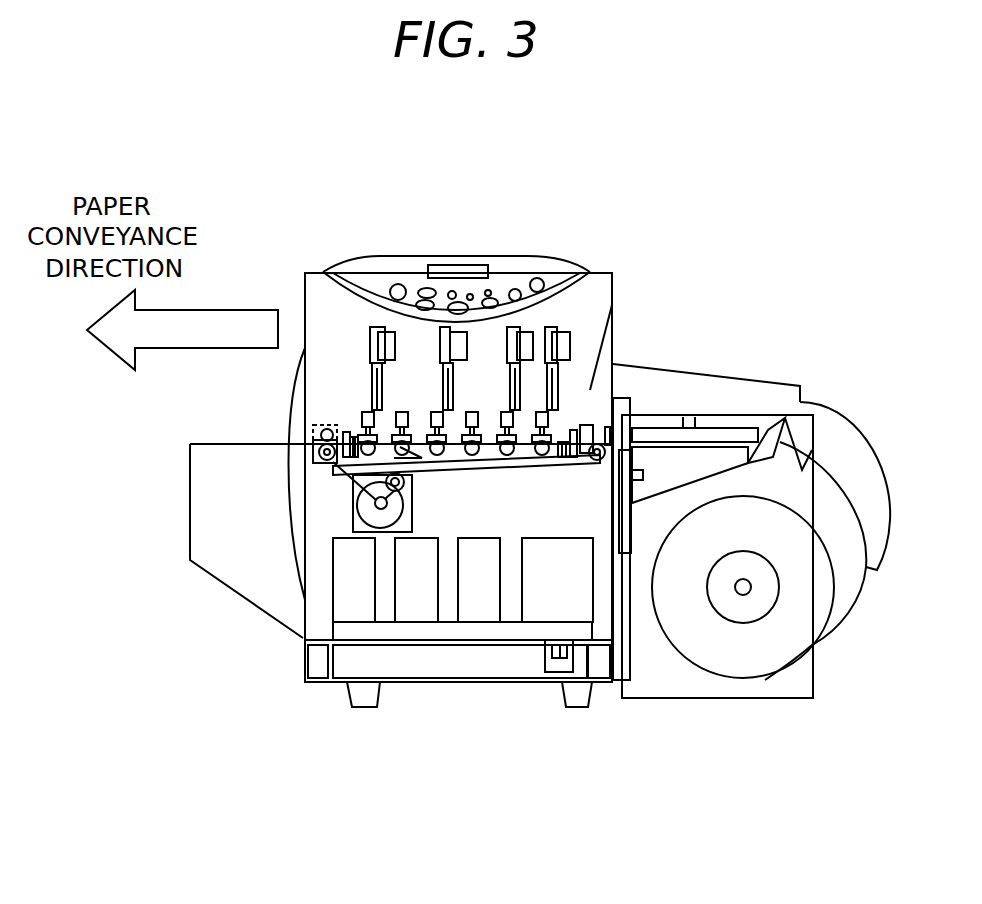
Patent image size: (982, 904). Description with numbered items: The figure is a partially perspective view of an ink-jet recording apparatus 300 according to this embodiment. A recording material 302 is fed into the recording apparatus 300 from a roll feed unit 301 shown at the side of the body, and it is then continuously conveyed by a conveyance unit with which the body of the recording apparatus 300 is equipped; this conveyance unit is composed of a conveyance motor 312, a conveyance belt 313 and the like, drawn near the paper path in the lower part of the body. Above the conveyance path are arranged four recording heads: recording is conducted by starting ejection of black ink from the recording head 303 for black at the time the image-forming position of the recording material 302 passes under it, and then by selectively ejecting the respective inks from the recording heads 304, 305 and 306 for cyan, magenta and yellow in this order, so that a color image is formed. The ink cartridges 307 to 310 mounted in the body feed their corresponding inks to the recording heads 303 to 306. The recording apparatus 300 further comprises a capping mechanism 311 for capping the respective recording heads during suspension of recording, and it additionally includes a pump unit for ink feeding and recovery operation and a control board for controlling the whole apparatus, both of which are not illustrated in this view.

The recording apparatus 300 is at (303, 303).
The roll feed unit 301 is at (743, 608).
The recording material 302 is at (823, 592).
The recording head for black 303 is at (568, 338).
The recording head for cyan 304 is at (527, 337).
The recording head for magenta 305 is at (453, 337).
The recording head for yellow 306 is at (378, 345).
The ink cartridge 307 is at (568, 612).
The ink cartridge 308 is at (482, 613).
The ink cartridge 309 is at (417, 613).
The ink cartridge 310 is at (353, 612).
The capping mechanism 311 is at (552, 420).
The conveyance motor 312 is at (360, 518).
The conveyance belt 313 is at (353, 473).